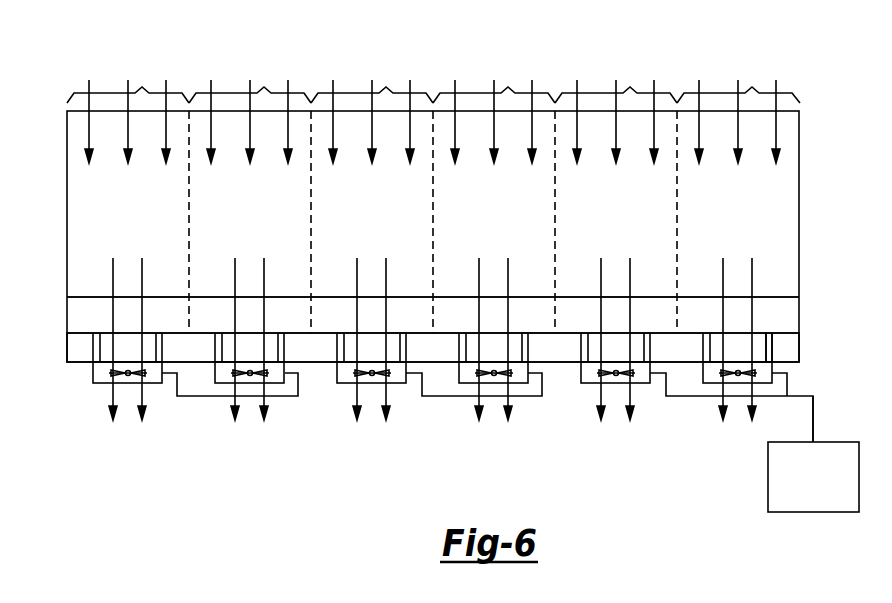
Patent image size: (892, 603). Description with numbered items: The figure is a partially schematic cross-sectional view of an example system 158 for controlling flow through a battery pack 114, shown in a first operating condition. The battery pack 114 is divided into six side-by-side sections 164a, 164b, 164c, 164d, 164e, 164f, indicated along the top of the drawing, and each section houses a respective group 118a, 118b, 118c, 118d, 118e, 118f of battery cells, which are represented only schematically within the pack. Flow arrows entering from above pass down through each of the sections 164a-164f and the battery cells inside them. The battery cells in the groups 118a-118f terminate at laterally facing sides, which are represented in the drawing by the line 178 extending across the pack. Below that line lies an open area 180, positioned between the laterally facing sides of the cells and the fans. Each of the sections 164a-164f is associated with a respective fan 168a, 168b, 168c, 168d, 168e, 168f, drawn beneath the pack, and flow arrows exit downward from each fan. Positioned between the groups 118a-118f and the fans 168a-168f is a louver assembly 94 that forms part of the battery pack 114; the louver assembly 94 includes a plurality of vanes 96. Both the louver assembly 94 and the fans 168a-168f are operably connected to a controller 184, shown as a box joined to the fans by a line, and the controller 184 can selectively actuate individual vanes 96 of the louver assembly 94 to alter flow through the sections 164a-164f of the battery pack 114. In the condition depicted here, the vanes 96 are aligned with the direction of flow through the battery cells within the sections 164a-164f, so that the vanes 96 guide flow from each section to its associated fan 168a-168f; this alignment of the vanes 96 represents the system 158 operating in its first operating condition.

The battery pack 114 is at (828, 137).
The louver assembly 94 is at (830, 335).
The vanes 96 is at (773, 347).
The line representing laterally facing sides 178 is at (82, 297).
The open area 180 is at (76, 320).
The system 158 is at (757, 556).
The controller 184 is at (823, 500).
The section 164a is at (142, 87).
The section 164b is at (264, 87).
The section 164c is at (386, 87).
The section 164d is at (508, 87).
The section 164e is at (630, 87).
The section 164f is at (752, 87).
The group of battery cells 118a is at (138, 217).
The group of battery cells 118b is at (260, 217).
The group of battery cells 118c is at (382, 217).
The group of battery cells 118d is at (504, 217).
The group of battery cells 118e is at (626, 217).
The group of battery cells 118f is at (748, 217).
The fan 168a is at (93, 373).
The fan 168b is at (215, 373).
The fan 168c is at (337, 373).
The fan 168d is at (459, 373).
The fan 168e is at (581, 373).
The fan 168f is at (703, 373).